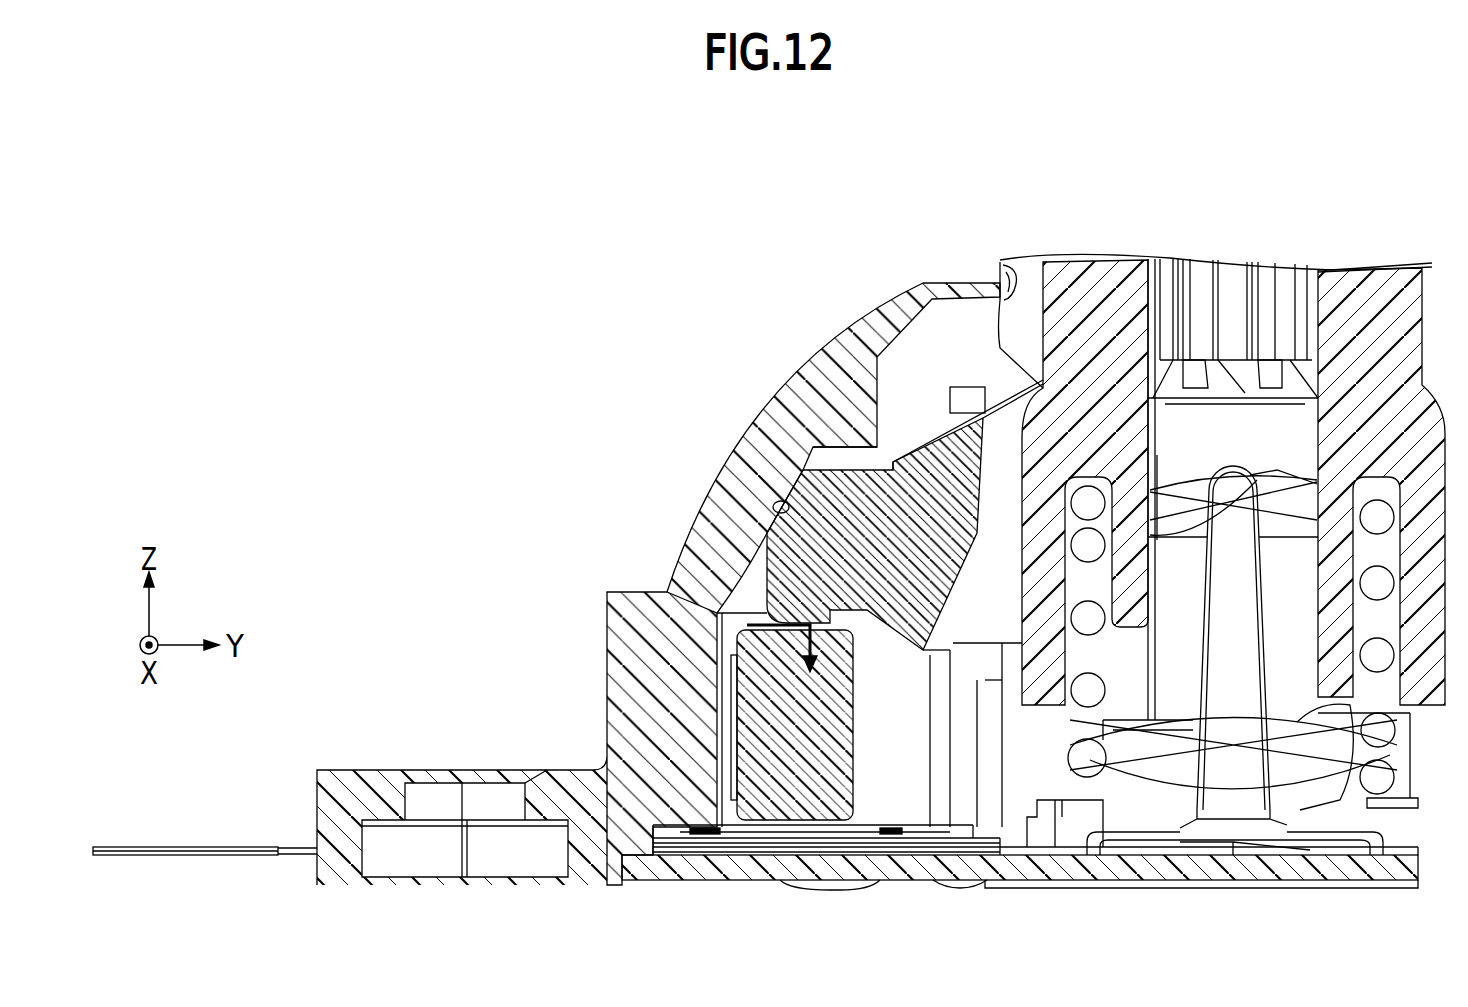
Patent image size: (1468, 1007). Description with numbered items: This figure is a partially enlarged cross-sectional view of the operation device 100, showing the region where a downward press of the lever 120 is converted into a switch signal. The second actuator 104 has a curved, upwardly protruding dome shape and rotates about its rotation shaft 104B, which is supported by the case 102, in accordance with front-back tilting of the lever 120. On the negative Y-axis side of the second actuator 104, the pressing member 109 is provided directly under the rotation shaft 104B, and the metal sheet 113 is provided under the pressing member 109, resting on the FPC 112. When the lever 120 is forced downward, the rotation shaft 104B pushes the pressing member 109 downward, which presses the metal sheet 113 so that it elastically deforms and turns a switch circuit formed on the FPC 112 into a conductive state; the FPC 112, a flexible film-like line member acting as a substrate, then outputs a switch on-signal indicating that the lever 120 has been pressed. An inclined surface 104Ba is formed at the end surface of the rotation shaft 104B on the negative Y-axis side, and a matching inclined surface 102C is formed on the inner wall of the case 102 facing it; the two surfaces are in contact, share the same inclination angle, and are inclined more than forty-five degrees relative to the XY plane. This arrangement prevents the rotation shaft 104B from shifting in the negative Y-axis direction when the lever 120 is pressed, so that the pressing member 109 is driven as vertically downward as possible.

The operation device 100 is at (1447, 123).
The case 102 is at (925, 300).
The inclined surface 102C is at (785, 511).
The second actuator 104 is at (970, 413).
The rotation shaft 104B is at (838, 487).
The inclined surface 104Ba is at (787, 473).
The pressing member 109 is at (768, 807).
The FPC 112 is at (217, 847).
The metal sheet 113 is at (900, 817).
The lever 120 is at (1043, 327).